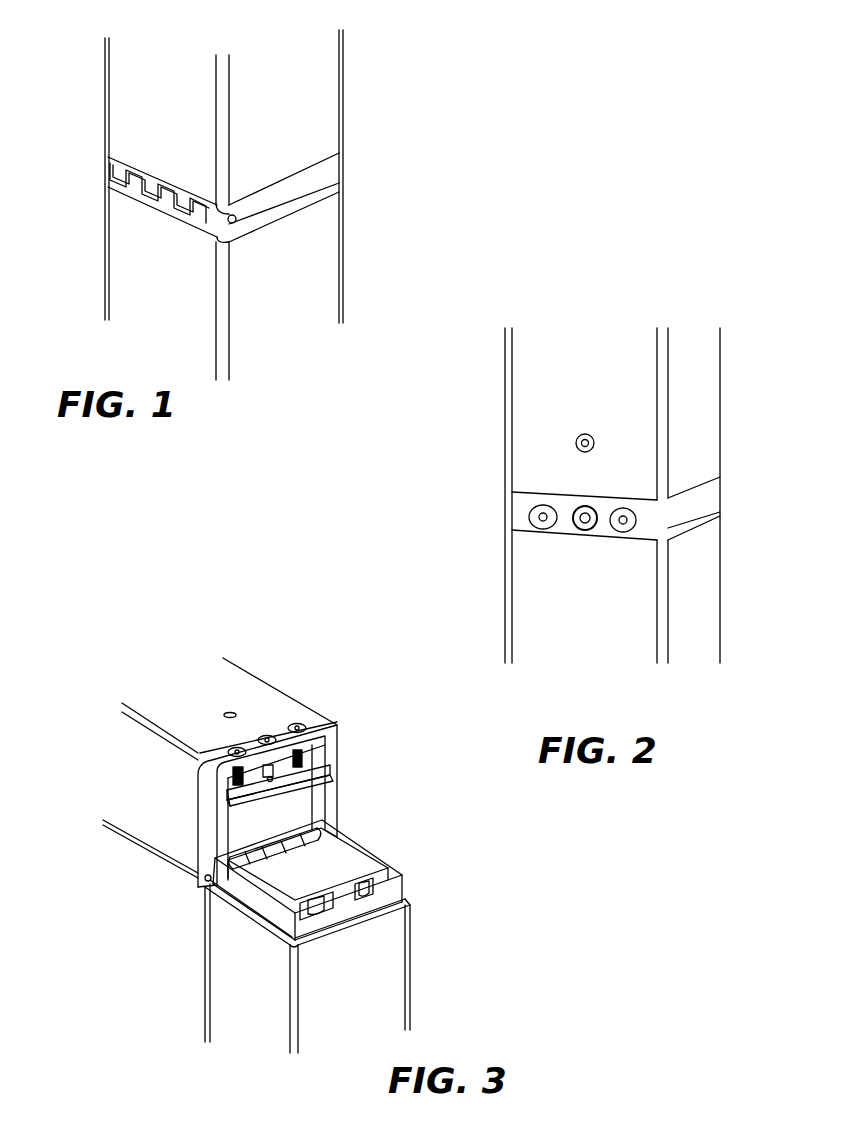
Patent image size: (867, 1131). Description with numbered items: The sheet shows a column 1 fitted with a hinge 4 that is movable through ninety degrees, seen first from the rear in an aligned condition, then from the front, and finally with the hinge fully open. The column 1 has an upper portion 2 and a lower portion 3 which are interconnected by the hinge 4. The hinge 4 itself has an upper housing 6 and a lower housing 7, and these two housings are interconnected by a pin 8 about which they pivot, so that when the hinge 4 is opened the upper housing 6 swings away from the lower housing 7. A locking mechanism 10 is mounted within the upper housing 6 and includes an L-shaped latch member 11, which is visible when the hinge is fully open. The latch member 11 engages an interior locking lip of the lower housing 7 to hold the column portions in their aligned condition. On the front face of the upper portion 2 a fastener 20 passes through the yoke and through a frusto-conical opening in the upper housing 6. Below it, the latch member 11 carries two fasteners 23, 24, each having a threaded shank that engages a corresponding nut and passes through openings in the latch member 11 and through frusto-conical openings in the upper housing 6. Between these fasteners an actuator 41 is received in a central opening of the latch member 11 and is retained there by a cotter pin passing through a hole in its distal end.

In FIG. 1, the column 1 is at (370, 88).
In FIG. 2, the column 1 is at (465, 435).
In FIG. 1, the upper portion 2 is at (135, 110).
In FIG. 2, the upper portion 2 is at (697, 400).
In FIG. 1, the lower portion 3 is at (310, 300).
In FIG. 2, the lower portion 3 is at (562, 607).
In FIG. 1, the hinge 4 is at (347, 187).
In FIG. 2, the hinge 4 is at (697, 503).
In FIG. 3, the upper housing 6 is at (215, 818).
In FIG. 3, the lower housing 7 is at (367, 860).
In FIG. 1, the pin 8 is at (236, 220).
In FIG. 3, the pin 8 is at (207, 885).
In FIG. 3, the locking mechanism 10 is at (318, 748).
In FIG. 3, the latch member 11 is at (327, 770).
In FIG. 2, the fastener 20 is at (590, 438).
In FIG. 2, the fastener 23 is at (538, 517).
In FIG. 2, the fastener 24 is at (628, 522).
In FIG. 2, the actuator 41 is at (590, 523).
In FIG. 3, the actuator 41 is at (272, 777).